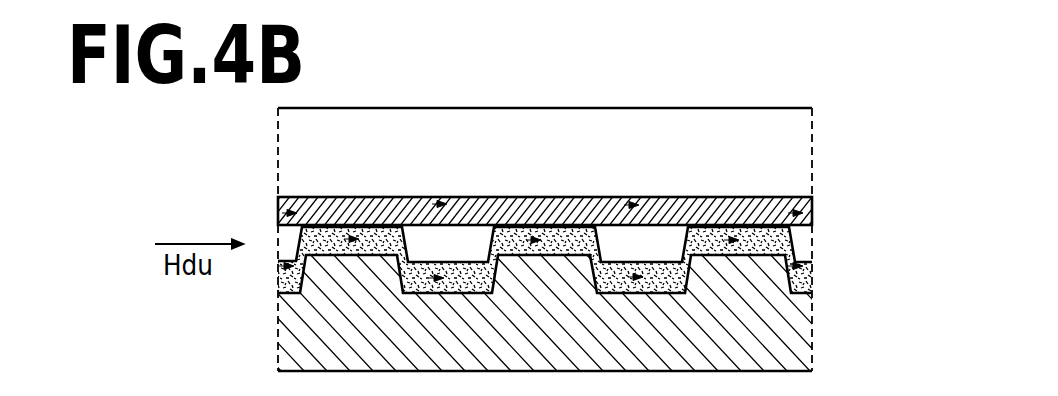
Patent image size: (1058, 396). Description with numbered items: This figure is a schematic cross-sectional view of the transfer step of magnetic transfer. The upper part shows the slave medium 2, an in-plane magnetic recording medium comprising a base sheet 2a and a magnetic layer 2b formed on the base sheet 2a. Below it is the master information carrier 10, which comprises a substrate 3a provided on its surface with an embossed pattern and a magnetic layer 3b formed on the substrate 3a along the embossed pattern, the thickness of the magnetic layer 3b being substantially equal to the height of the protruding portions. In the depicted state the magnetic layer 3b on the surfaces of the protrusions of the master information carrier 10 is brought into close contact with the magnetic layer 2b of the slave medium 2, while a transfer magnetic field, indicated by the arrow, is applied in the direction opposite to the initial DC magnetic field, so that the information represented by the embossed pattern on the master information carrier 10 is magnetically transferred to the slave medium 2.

The slave medium 2 is at (601, 160).
The base sheet 2a is at (813, 160).
The magnetic layer 2b is at (578, 188).
The master information carrier 10 is at (568, 293).
The substrate 3a is at (903, 215).
The magnetic layer 3b is at (813, 281).